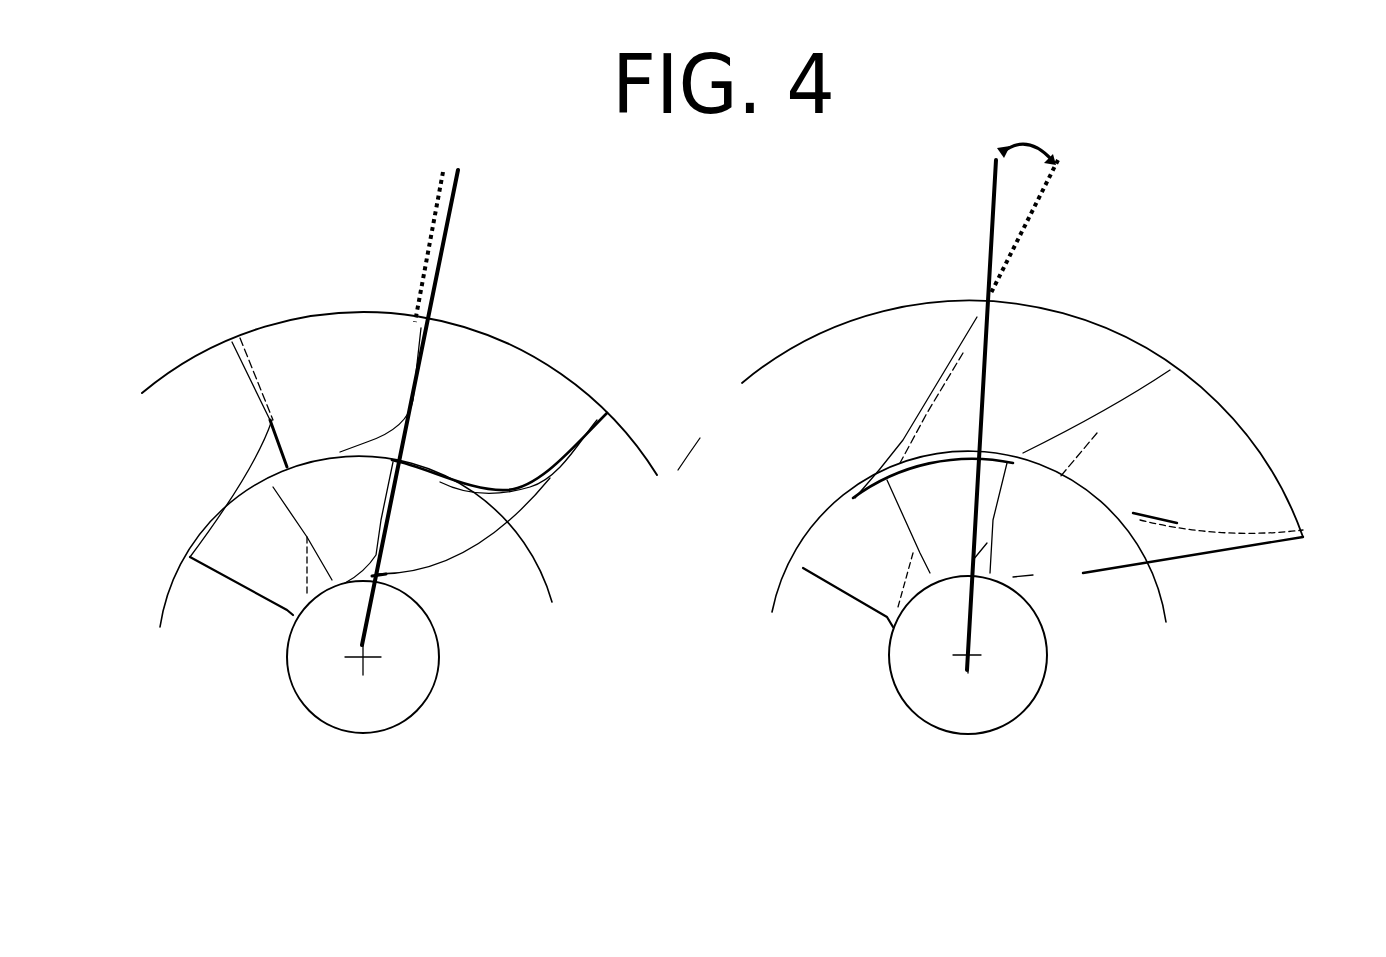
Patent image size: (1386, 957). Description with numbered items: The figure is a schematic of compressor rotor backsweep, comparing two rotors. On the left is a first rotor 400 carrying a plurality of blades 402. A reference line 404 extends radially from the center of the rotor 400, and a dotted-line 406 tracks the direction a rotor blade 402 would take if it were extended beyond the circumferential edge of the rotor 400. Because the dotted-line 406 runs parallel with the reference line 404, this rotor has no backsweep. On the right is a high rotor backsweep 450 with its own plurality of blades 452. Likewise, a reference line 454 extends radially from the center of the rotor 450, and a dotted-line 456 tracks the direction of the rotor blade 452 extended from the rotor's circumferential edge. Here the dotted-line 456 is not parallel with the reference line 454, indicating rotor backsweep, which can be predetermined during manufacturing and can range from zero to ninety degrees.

The first rotor 400 is at (382, 868).
The blades 402 is at (367, 442).
The reference line 404 is at (435, 300).
The dotted-line 406 is at (423, 273).
The high rotor backsweep 450 is at (1003, 855).
The blades 452 is at (952, 367).
The reference line 454 is at (990, 248).
The dotted-line 456 is at (1003, 282).